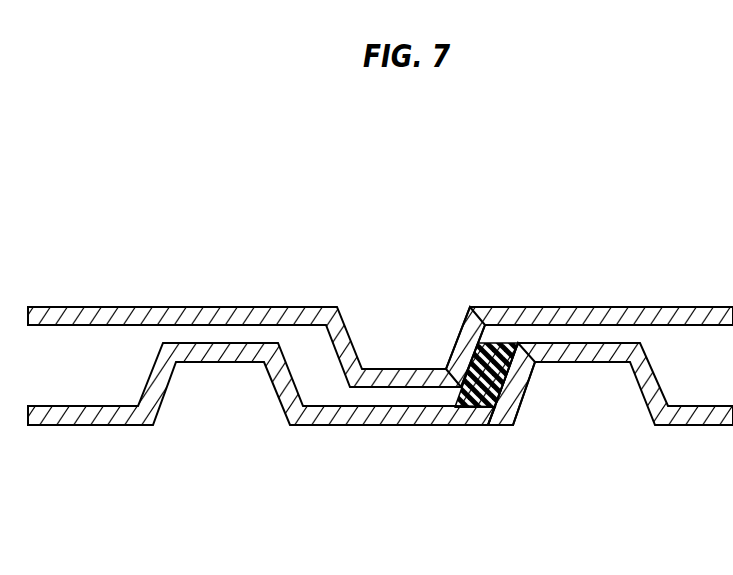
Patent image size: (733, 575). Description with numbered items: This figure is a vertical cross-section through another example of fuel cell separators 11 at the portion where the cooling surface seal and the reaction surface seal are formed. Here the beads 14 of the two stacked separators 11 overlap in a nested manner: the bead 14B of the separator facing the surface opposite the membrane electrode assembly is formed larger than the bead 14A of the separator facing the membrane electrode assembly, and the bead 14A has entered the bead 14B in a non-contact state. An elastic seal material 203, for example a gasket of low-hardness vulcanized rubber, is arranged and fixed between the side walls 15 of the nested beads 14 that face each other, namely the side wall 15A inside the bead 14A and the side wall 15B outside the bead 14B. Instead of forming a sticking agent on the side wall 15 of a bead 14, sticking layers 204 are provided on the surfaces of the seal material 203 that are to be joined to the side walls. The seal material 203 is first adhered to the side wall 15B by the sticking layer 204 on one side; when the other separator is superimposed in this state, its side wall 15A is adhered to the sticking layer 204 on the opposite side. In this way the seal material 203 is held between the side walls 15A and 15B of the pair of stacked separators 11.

The separator 11 is at (252, 307).
The bead 14 is at (380, 358).
The bead of separator 11A 14A is at (383, 387).
The bead of separator 11B 14B is at (598, 343).
The side wall 15 is at (519, 290).
The side wall inside bead 14A 15A is at (487, 323).
The side wall outside bead 14B 15B is at (522, 328).
The seal material 203 is at (490, 343).
The sticking layer 204 is at (488, 405).